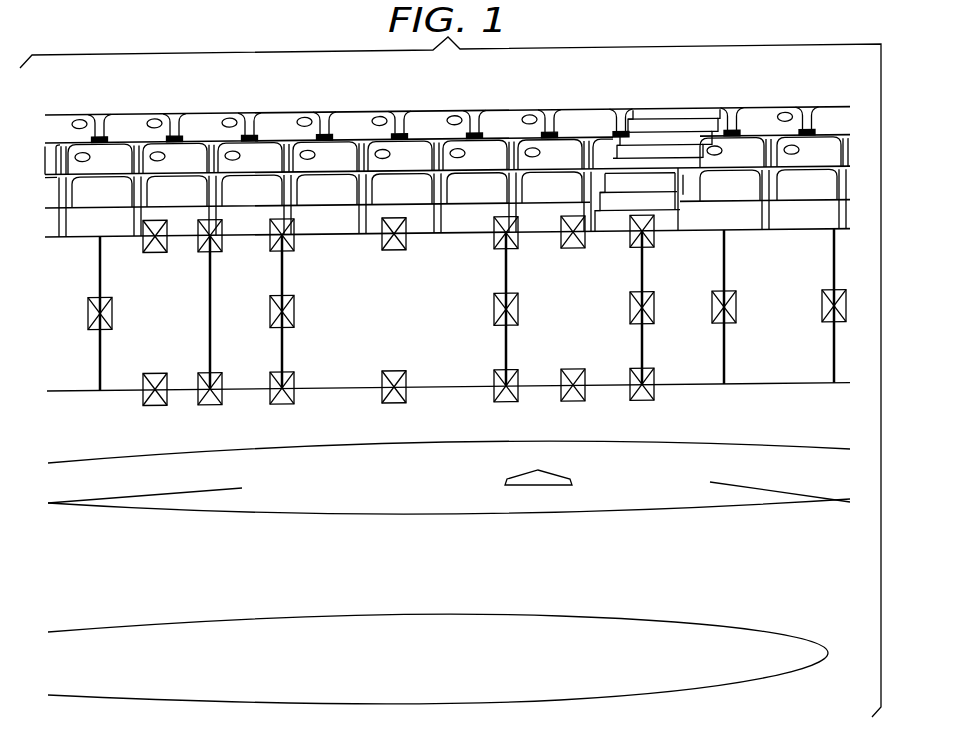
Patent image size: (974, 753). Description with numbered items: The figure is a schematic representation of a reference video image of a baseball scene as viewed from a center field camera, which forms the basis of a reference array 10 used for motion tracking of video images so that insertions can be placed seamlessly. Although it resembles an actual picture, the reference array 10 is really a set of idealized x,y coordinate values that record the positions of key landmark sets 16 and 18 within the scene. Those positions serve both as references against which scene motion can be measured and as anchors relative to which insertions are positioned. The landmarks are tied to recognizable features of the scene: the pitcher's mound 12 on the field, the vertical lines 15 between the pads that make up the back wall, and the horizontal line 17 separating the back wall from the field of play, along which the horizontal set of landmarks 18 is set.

The reference array 10 is at (928, 135).
The pitcher's mound 12 is at (453, 626).
The vertical lines 15 is at (213, 300).
The key landmark set 16 is at (112, 311).
The horizontal line 17 is at (462, 386).
The horizontal set of landmarks 18 is at (157, 373).